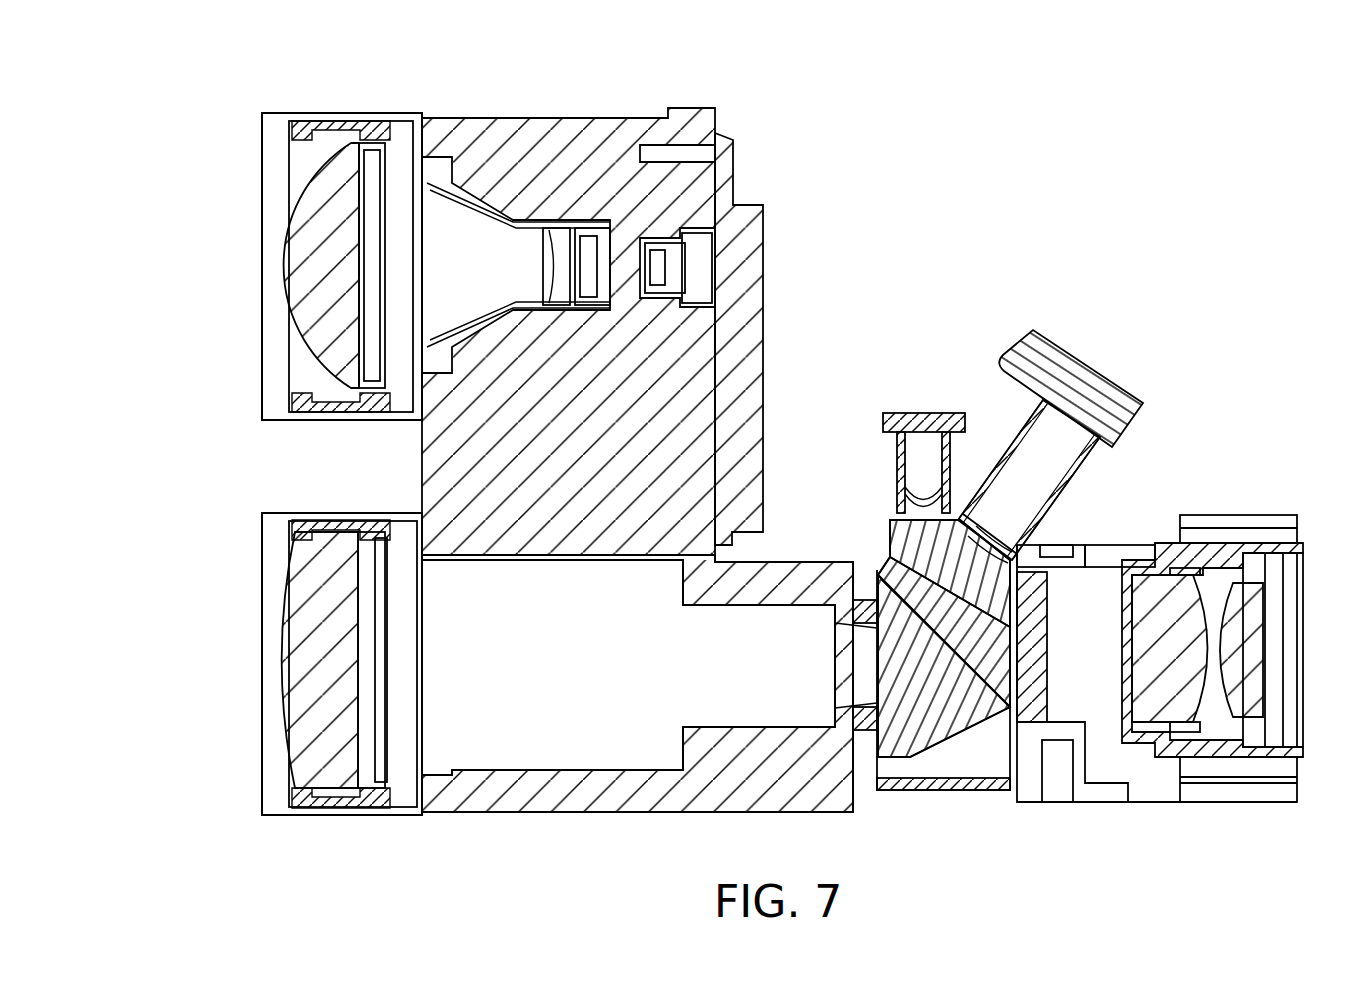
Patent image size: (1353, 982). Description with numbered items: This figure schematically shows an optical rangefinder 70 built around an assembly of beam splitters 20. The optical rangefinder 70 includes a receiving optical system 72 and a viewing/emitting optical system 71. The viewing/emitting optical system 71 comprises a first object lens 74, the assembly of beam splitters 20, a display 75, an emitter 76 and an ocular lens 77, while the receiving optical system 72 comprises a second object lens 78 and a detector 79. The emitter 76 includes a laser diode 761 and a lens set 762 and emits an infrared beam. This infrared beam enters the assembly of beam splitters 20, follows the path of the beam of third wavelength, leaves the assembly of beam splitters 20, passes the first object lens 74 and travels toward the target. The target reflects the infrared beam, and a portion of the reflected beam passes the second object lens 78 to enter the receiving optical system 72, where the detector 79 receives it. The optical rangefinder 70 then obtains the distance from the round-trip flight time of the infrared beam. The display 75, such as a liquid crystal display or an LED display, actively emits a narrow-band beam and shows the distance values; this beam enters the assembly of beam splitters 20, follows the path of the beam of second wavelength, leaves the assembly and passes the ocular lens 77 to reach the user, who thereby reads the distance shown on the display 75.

The optical rangefinder 70 is at (233, 49).
The viewing/emitting optical system 71 is at (650, 815).
The receiving optical system 72 is at (483, 104).
The first object lens 74 is at (329, 790).
The display 75 is at (922, 412).
The emitter 76 is at (1234, 353).
The laser diode 761 is at (1088, 378).
The lens set 762 is at (1003, 533).
The ocular lens 77 is at (1253, 717).
The second object lens 78 is at (293, 270).
The detector 79 is at (712, 268).
The assembly of beam splitters 20 is at (958, 742).